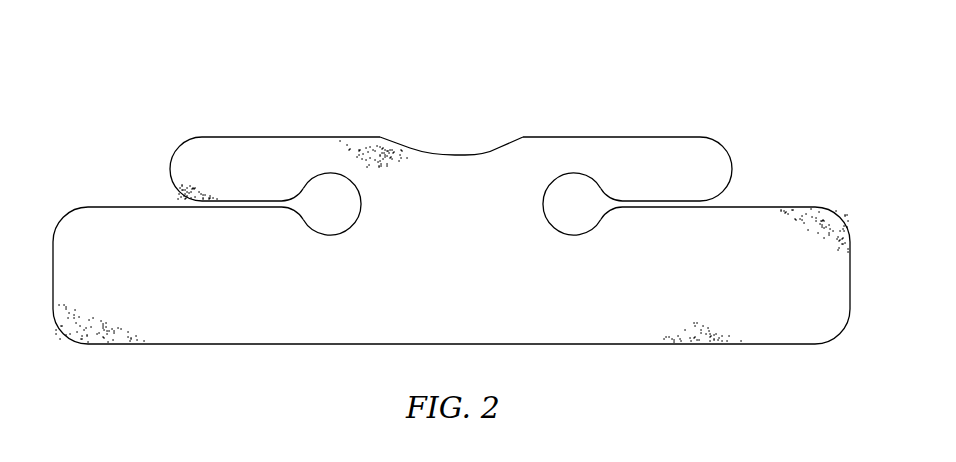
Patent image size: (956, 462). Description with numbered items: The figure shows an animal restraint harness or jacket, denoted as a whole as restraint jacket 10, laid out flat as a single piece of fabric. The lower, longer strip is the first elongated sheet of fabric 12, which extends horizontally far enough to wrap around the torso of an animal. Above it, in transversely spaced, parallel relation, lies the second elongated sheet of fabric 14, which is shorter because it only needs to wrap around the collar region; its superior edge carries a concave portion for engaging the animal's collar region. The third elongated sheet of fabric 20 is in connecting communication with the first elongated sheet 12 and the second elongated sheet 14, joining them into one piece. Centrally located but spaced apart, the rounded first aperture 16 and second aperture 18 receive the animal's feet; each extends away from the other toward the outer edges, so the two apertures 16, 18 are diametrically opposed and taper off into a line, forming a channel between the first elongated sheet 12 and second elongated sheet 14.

The restraint jacket 10 is at (300, 88).
The first elongated sheet of fabric 12 is at (502, 320).
The second elongated sheet of fabric 14 is at (570, 157).
The first aperture 16 is at (340, 213).
The second aperture 18 is at (584, 214).
The third elongated sheet of fabric 20 is at (470, 223).